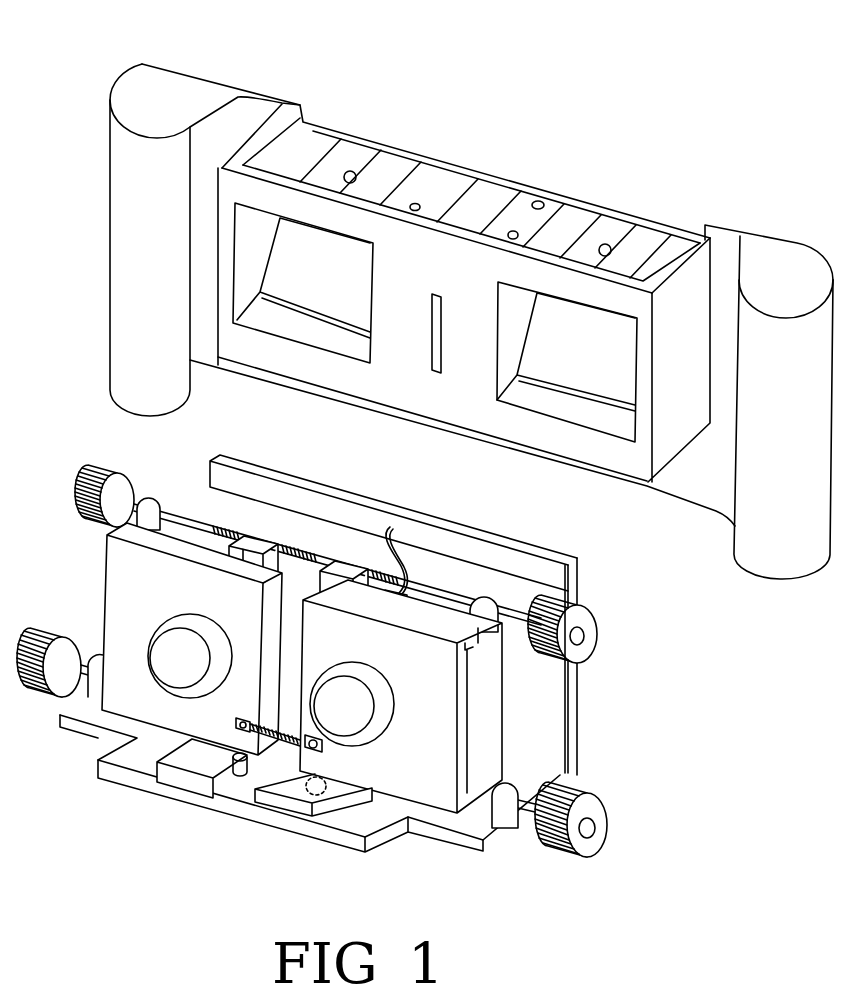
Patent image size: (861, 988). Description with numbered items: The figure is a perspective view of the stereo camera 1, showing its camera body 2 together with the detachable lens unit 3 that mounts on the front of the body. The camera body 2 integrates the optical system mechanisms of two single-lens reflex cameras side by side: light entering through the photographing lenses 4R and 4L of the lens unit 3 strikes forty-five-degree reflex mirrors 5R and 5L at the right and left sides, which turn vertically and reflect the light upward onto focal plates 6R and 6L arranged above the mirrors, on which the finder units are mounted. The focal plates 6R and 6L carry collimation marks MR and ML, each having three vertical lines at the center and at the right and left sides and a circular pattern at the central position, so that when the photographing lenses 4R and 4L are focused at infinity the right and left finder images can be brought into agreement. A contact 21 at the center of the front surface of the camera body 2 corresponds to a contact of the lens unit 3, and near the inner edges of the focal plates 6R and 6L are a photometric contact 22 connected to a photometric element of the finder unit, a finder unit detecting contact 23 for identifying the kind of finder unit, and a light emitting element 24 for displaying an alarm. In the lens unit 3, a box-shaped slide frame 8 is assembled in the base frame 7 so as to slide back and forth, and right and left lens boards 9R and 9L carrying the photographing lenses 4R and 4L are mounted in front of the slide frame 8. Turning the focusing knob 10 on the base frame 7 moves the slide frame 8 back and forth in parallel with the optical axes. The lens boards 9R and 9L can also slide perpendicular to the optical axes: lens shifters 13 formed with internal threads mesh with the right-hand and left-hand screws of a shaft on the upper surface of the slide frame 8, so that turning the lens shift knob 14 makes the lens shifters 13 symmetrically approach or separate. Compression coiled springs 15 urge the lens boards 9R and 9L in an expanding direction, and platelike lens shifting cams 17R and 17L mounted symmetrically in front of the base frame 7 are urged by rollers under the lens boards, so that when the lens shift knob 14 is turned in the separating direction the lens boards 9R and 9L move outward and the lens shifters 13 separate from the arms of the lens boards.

The stereo camera 1 is at (493, 127).
The camera body 2 is at (245, 91).
The lens unit 3 is at (175, 501).
The photographing lens 4R is at (147, 653).
The photographing lens 4L is at (366, 745).
The reflex mirror 5R is at (293, 296).
The reflex mirror 5L is at (583, 382).
The focal plate 6R is at (413, 178).
The focal plate 6L is at (667, 250).
The base frame 7 is at (113, 778).
The slide frame 8 is at (492, 722).
The lens board 9R is at (121, 575).
The lens board 9L is at (436, 790).
The focusing knob 10 is at (608, 826).
The lens shifter 13 is at (257, 543).
The lens shift knob 14 is at (598, 638).
The compression coiled spring 15 is at (285, 747).
The lens shifting cam 17R is at (173, 777).
The lens shifting cam 17L is at (275, 806).
The contact 21 is at (433, 374).
The photometric contact 22 is at (438, 220).
The finder unit detecting contact 23 is at (512, 230).
The light emitting element 24 is at (539, 201).
The collimation mark MR is at (351, 171).
The collimation mark ML is at (606, 244).